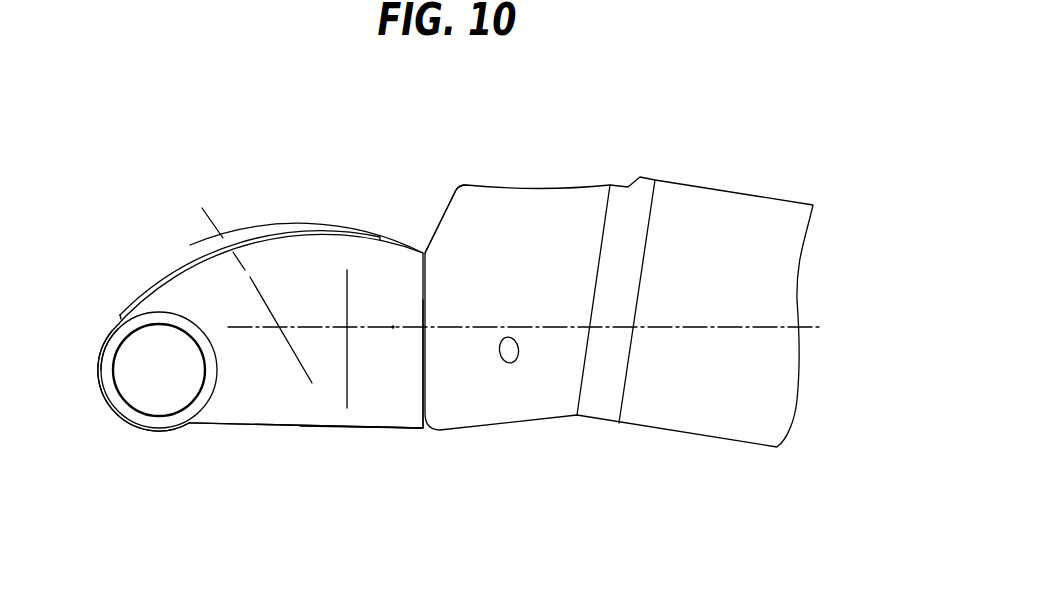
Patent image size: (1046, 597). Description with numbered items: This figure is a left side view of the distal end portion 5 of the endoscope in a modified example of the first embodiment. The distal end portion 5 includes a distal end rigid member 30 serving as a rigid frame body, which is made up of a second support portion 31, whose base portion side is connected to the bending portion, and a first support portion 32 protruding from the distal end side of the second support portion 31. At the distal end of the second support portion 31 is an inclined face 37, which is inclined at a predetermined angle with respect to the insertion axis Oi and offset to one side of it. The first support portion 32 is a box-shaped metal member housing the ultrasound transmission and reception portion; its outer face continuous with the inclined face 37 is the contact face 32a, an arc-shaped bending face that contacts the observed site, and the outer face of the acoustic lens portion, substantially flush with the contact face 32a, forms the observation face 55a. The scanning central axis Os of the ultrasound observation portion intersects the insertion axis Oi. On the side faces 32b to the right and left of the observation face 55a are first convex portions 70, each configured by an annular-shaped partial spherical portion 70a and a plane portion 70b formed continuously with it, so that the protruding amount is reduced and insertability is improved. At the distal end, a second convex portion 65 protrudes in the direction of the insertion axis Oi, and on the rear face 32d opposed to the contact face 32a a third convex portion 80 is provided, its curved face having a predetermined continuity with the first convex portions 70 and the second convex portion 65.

The distal end portion 5 is at (476, 146).
The distal end rigid member 30 is at (615, 527).
The second support portion 31 is at (425, 490).
The first support portion 32 is at (98, 492).
The contact face 32a is at (323, 231).
The side faces 32b is at (242, 360).
The rear face 32d is at (290, 428).
The inclined face 37 is at (440, 223).
The observation face 55a is at (268, 236).
The second convex portion 65 is at (97, 387).
The first convex portions 70 is at (158, 311).
The partial spherical portion 70a is at (118, 343).
The plane portion 70b is at (148, 340).
The third convex portion 80 is at (167, 430).
The insertion axis Oi is at (393, 327).
The scanning central axis Os is at (215, 226).